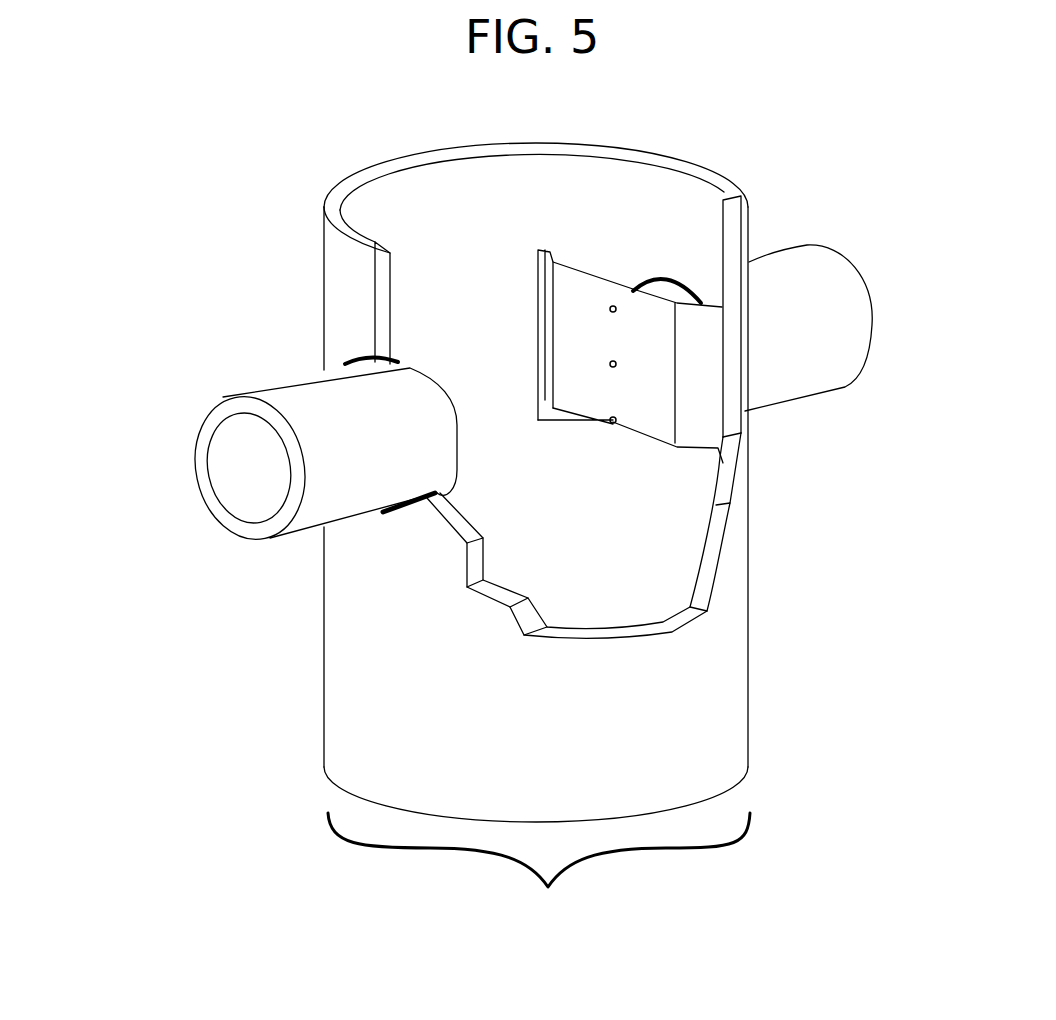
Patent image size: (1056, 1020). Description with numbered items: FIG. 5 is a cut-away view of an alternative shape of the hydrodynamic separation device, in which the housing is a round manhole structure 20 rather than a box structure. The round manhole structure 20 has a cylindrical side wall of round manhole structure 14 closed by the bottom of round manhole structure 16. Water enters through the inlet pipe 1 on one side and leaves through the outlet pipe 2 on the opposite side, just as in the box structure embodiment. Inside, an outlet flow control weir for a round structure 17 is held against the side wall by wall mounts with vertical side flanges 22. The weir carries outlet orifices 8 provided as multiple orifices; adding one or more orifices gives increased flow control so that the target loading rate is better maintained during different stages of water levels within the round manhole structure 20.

The inlet pipe 1 is at (222, 413).
The outlet pipe 2 is at (822, 283).
The outlet orifices 8 is at (622, 367).
The side wall of round manhole structure 14 is at (343, 633).
The bottom of round manhole structure 16 is at (690, 805).
The outlet flow control weir for a round structure 17 is at (707, 397).
The round manhole structure 20 is at (539, 877).
The wall mounts with vertical side flanges 22 is at (533, 263).